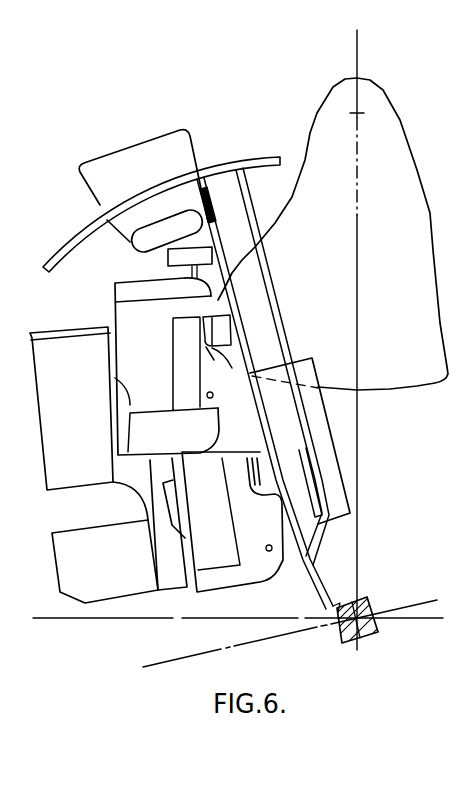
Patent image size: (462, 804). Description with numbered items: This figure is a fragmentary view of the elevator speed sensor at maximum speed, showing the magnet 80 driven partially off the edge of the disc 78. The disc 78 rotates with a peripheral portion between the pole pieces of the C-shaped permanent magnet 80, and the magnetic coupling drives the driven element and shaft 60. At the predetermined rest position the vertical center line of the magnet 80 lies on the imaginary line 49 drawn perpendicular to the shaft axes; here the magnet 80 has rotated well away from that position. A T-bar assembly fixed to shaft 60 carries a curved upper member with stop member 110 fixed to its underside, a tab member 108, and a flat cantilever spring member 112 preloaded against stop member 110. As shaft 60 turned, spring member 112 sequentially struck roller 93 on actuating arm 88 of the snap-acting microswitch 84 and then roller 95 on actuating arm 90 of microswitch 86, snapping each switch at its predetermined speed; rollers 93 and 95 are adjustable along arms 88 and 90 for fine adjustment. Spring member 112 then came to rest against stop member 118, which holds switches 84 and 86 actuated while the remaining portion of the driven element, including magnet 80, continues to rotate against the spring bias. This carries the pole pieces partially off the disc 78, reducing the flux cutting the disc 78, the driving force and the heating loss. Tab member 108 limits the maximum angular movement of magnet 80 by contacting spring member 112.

The imaginary line 49 is at (358, 57).
The second shaft 60 is at (367, 638).
The disc 78 is at (401, 388).
The magnet 80 is at (322, 426).
The switch 84 is at (245, 585).
The switch 86 is at (115, 308).
The actuating arm 88 is at (232, 348).
The actuating arm 90 is at (213, 290).
The roller 93 is at (228, 317).
The roller 95 is at (168, 258).
The tab member 108 is at (207, 200).
The stop member 110 is at (65, 268).
The cantilever spring member 112 is at (252, 252).
The stop member 118 is at (137, 247).